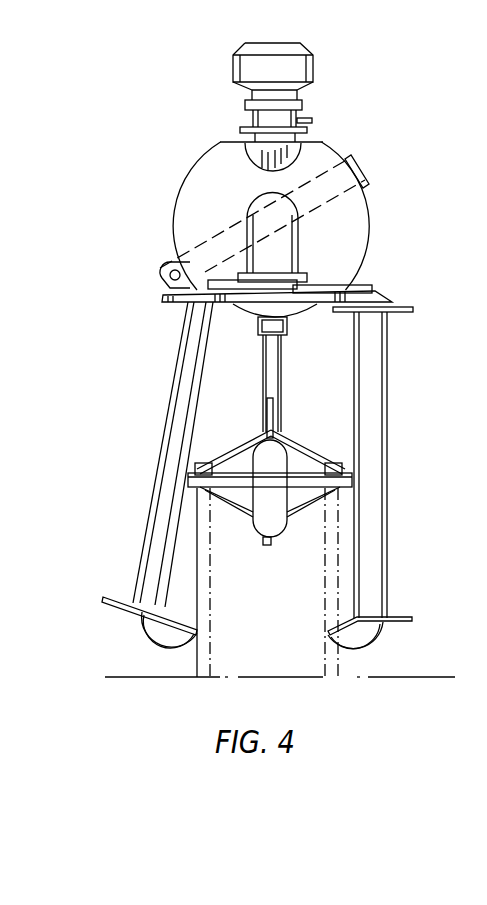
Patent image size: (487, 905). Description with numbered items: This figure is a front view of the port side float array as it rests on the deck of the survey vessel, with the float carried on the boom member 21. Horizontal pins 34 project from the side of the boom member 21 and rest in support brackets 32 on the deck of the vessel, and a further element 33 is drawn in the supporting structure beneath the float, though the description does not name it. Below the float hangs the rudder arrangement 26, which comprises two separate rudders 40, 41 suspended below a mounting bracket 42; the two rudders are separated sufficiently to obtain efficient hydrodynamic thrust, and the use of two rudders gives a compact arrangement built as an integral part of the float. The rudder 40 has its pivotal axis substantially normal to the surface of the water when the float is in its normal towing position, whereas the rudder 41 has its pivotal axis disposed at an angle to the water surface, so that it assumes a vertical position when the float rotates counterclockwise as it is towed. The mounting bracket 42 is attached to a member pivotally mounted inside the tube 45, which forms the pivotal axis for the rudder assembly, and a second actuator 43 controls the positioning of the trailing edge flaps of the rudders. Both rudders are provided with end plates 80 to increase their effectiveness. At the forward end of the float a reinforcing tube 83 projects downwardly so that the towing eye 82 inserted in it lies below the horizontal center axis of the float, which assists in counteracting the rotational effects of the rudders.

The boom member 21 is at (278, 522).
The rudder arrangement 26 is at (398, 472).
The support brackets 32 is at (211, 608).
The struts 33 is at (306, 447).
The horizontal pins 34 is at (222, 482).
The rudder 40 is at (388, 360).
The rudder 41 is at (172, 386).
The mounting bracket 42 is at (375, 302).
The second actuator 43 is at (313, 68).
The tube 45 is at (293, 249).
The end plates 80 is at (125, 608).
The towing eye 82 is at (166, 270).
The reinforcing tube 83 is at (331, 170).